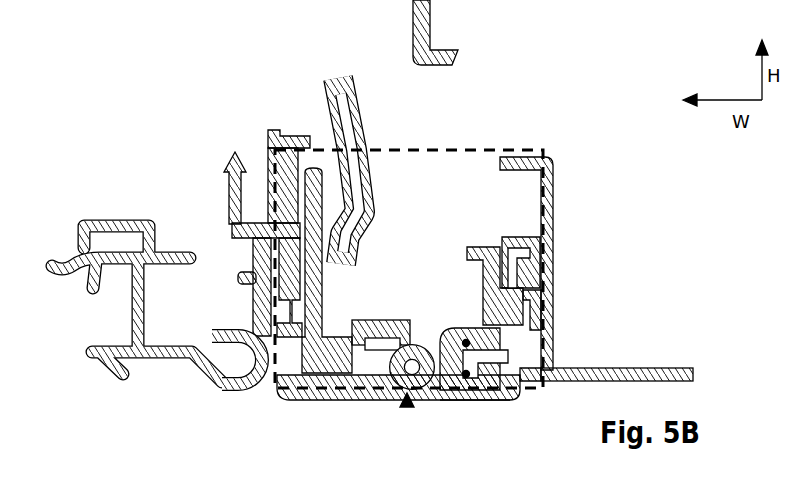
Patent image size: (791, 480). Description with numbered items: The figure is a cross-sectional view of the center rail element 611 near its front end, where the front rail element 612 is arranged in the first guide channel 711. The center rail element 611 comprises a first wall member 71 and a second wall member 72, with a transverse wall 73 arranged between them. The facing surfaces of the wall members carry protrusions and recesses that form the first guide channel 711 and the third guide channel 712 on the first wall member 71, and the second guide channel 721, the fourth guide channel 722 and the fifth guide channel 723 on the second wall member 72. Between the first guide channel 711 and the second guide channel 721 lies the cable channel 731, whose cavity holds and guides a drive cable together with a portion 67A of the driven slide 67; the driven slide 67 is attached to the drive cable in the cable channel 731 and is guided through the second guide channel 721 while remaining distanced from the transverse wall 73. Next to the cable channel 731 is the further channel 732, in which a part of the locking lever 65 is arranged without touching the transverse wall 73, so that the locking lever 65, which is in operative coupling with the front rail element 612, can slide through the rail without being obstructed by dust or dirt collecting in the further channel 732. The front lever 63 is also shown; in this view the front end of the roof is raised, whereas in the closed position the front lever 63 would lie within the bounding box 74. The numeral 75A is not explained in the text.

The front lever 63 is at (368, 121).
The locking lever 65 is at (485, 295).
The driven slide 67 is at (315, 293).
The portion of the driven slide 67A is at (375, 398).
The first wall member 71 is at (553, 212).
The first guide channel 711 is at (558, 297).
The third guide channel 712 is at (523, 193).
The second wall member 72 is at (243, 234).
The second guide channel 721 is at (267, 390).
The fourth guide channel 722 is at (275, 282).
The fifth guide channel 723 is at (290, 177).
The transverse wall 73 is at (337, 395).
The cable channel 731 is at (407, 407).
The further channel 732 is at (490, 372).
The bounding box 74 is at (483, 148).
The bottom element 75A is at (482, 440).
The center rail element 611 is at (587, 368).
The front rail element 612 is at (552, 318).